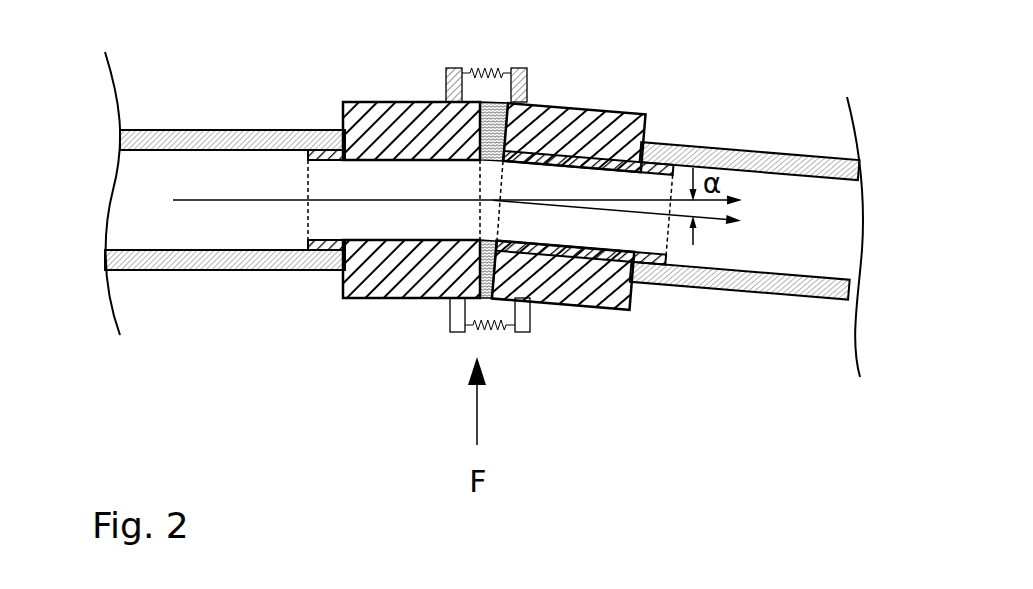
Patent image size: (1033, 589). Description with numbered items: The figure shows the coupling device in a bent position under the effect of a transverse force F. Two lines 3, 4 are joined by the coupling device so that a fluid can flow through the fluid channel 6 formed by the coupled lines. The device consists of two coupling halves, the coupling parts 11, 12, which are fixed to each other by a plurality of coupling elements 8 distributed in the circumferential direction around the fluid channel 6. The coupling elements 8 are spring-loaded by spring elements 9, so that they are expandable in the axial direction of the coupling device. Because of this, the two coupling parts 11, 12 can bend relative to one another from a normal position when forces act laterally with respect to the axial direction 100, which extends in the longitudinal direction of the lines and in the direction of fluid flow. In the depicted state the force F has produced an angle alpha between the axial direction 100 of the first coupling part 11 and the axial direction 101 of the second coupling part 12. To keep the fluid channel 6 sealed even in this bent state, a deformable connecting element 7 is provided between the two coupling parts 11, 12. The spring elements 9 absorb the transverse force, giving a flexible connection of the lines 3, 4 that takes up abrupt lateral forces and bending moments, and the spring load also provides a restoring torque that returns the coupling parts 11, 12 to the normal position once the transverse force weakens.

The line 3 is at (208, 140).
The line 4 is at (762, 147).
The fluid channel 6 is at (238, 227).
The deformable connecting element 7 is at (513, 287).
The coupling element 8 is at (520, 67).
The spring element 9 is at (477, 67).
The coupling part 11 is at (402, 100).
The coupling part 12 is at (607, 110).
The axial direction 100 is at (265, 198).
The axial direction 101 is at (722, 235).